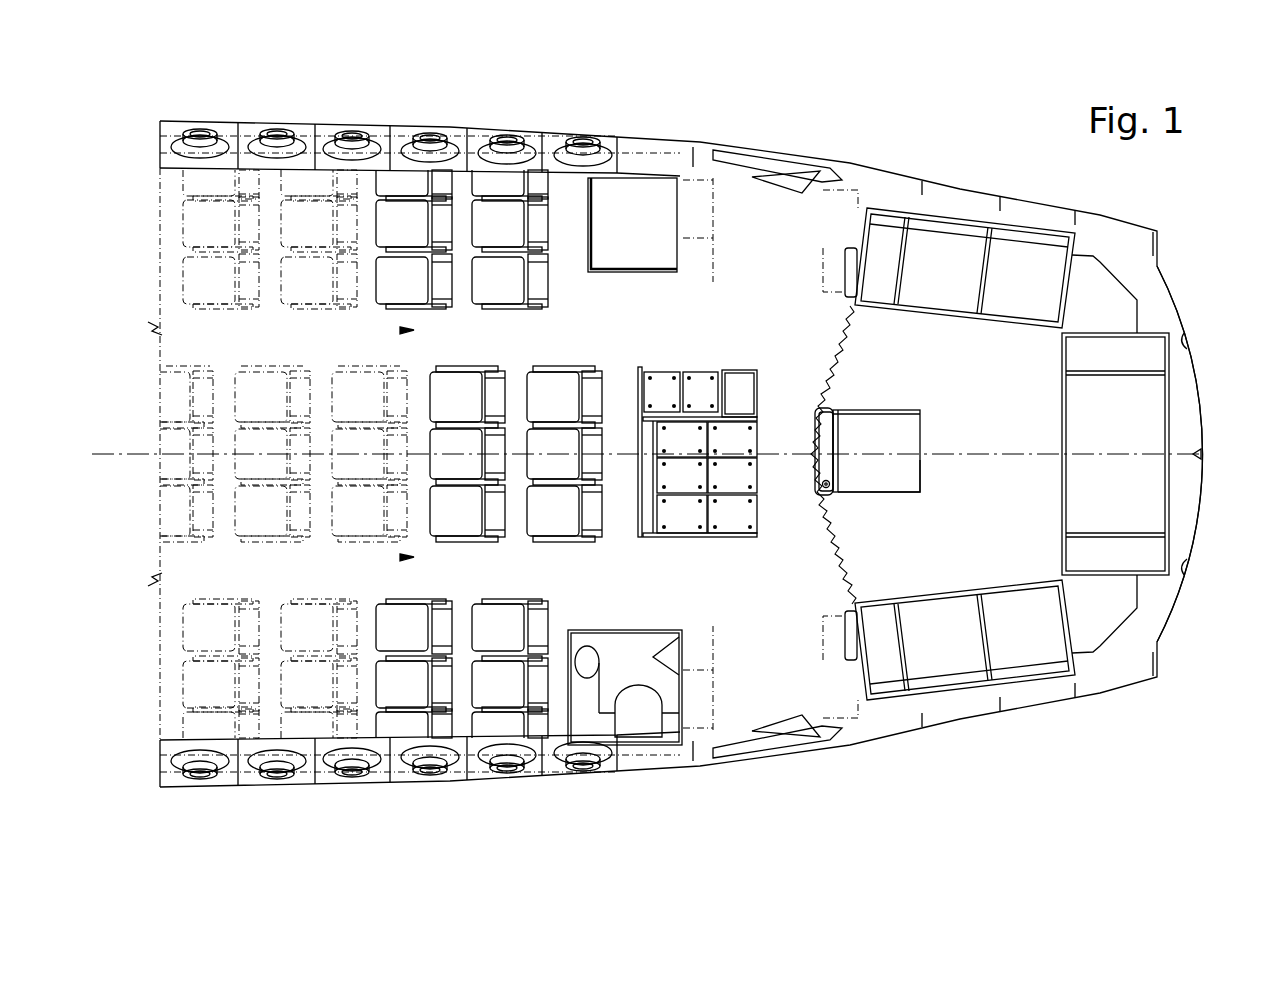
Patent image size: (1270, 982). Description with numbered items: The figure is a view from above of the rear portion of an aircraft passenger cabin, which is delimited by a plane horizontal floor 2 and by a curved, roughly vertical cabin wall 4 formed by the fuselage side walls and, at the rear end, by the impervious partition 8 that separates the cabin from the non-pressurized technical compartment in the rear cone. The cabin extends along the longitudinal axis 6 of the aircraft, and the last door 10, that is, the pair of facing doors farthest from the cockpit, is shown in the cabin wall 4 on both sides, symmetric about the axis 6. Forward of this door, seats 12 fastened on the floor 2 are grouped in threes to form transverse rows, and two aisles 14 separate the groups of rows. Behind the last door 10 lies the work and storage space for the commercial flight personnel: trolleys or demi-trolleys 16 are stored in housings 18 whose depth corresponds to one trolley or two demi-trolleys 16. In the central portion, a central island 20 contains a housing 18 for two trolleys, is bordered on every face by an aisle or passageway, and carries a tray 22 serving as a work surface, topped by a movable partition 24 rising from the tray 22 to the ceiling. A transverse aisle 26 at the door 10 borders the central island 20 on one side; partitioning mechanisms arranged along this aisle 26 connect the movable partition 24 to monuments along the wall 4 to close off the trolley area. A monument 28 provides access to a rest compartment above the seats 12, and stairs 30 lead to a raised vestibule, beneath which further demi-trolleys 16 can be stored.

The floor 2 is at (636, 334).
The cabin wall 4 is at (548, 140).
The longitudinal axis 6 is at (1229, 455).
The impervious partition 8 is at (1205, 420).
The last door 10 is at (770, 152).
The seats 12 is at (553, 388).
The aisles 14 is at (402, 331).
The demi-trolleys 16 is at (697, 370).
The housings 18 is at (942, 297).
The central island 20 is at (900, 497).
The tray 22 is at (907, 473).
The movable partition 24 is at (836, 443).
The transverse aisle 26 is at (798, 403).
The monument 28 is at (698, 540).
The stairs 30 is at (746, 390).